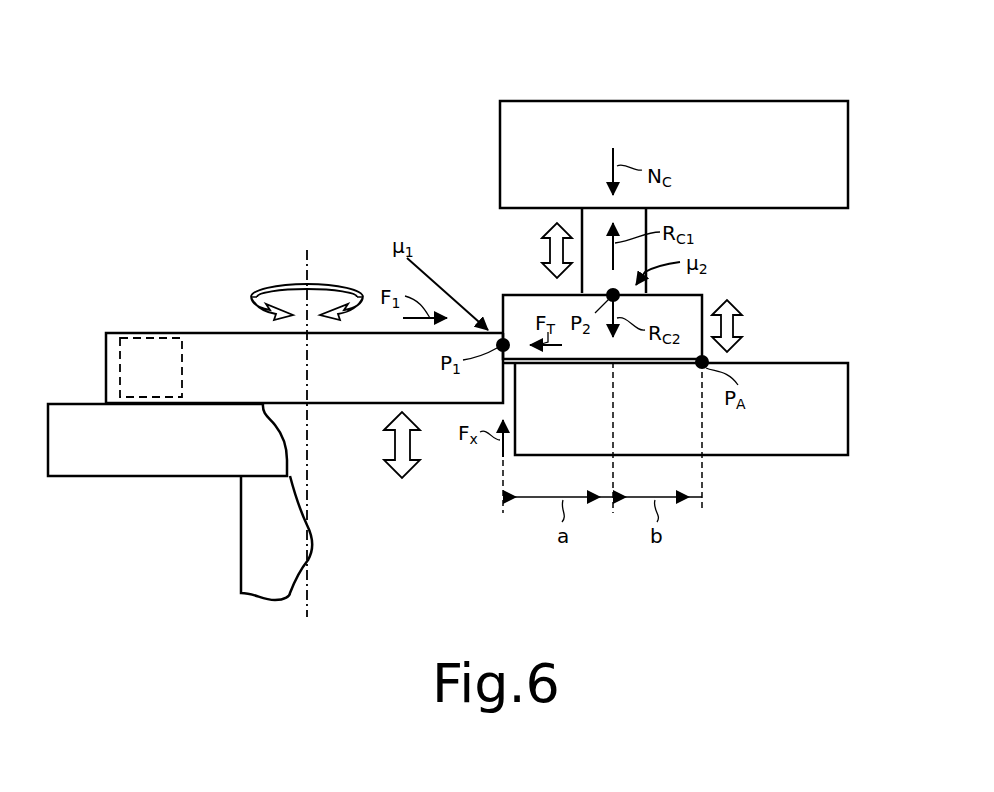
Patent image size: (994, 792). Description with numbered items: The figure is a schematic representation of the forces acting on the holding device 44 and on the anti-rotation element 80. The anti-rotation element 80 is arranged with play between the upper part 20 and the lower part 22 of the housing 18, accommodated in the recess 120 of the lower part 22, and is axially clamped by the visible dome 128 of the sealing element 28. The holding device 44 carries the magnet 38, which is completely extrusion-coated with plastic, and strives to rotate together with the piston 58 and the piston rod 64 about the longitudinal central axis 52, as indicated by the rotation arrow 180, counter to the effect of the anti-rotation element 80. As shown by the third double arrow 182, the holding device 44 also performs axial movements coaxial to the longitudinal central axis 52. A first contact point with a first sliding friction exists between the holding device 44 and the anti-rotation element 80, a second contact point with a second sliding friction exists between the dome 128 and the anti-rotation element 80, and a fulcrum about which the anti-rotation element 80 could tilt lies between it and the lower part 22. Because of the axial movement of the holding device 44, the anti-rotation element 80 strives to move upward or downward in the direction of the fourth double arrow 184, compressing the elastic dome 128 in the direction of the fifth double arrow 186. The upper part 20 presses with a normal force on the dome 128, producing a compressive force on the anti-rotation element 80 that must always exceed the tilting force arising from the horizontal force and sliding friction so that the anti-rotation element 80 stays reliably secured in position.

The housing 18 is at (674, 292).
The upper part 20 is at (752, 101).
The lower part 22 is at (780, 455).
The sealing element 28 is at (525, 179).
The dome 128 is at (597, 227).
The anti-rotation element 80 is at (500, 300).
The fifth double arrow 186 is at (543, 248).
The fourth double arrow 184 is at (737, 330).
The third double arrow 182 is at (410, 450).
The recess 120 is at (821, 337).
The holding device 44 is at (105, 352).
The magnet 38 is at (151, 367).
The piston 58 is at (167, 440).
The piston rod 64 is at (240, 545).
The longitudinal central axis 52 is at (308, 432).
The rotation arrow 180 is at (290, 283).